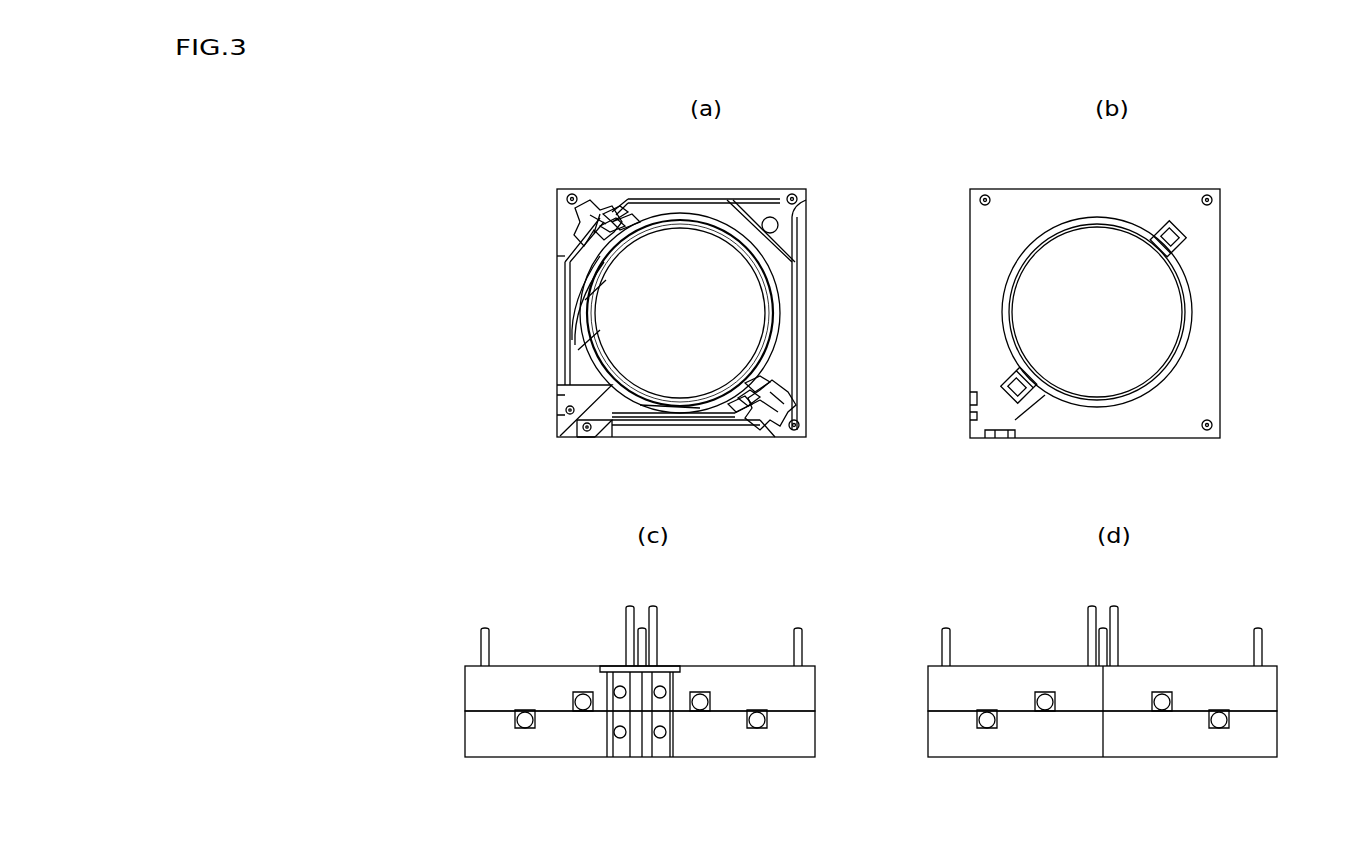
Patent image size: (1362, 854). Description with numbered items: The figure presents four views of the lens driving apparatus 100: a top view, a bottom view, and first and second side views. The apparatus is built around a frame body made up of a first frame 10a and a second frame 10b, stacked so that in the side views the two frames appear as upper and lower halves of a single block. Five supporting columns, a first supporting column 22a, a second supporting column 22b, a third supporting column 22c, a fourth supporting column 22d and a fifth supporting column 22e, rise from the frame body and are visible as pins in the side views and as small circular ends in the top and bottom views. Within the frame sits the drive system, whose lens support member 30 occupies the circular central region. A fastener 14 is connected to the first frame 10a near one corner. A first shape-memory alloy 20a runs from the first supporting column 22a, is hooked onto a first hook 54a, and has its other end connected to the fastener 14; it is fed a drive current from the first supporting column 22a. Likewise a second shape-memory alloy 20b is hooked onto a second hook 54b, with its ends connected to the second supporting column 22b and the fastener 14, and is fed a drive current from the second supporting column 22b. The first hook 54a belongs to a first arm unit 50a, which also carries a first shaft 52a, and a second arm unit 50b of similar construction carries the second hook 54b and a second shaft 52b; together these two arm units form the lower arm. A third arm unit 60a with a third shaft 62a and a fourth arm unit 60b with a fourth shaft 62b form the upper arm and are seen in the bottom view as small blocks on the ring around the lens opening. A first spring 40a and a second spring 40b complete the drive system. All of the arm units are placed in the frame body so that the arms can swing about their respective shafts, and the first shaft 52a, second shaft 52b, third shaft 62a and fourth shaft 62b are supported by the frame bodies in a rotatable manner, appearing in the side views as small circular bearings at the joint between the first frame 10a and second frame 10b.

The lens driving apparatus 100 is at (722, 487).
The first frame 10a is at (805, 268).
The second frame 10b is at (1213, 290).
The fastener 14 is at (772, 212).
The first shape-memory alloy 20a is at (630, 428).
The second shape-memory alloy 20b is at (573, 342).
The first supporting column 22a is at (587, 432).
The second supporting column 22b is at (566, 410).
The third supporting column 22c is at (800, 425).
The fourth supporting column 22d is at (797, 194).
The fifth supporting column 22e is at (572, 194).
The lens support member 30 is at (680, 222).
The first spring 40a is at (610, 215).
The second spring 40b is at (1178, 248).
The first arm unit 50a is at (782, 392).
The second arm unit 50b is at (606, 212).
The first shaft 52a is at (760, 725).
The second shaft 52b is at (522, 725).
The first hook 54a is at (782, 405).
The second hook 54b is at (580, 220).
The third arm unit 60a is at (1163, 223).
The fourth arm unit 60b is at (1012, 385).
The third shaft 62a is at (1044, 708).
The fourth shaft 62b is at (582, 708).